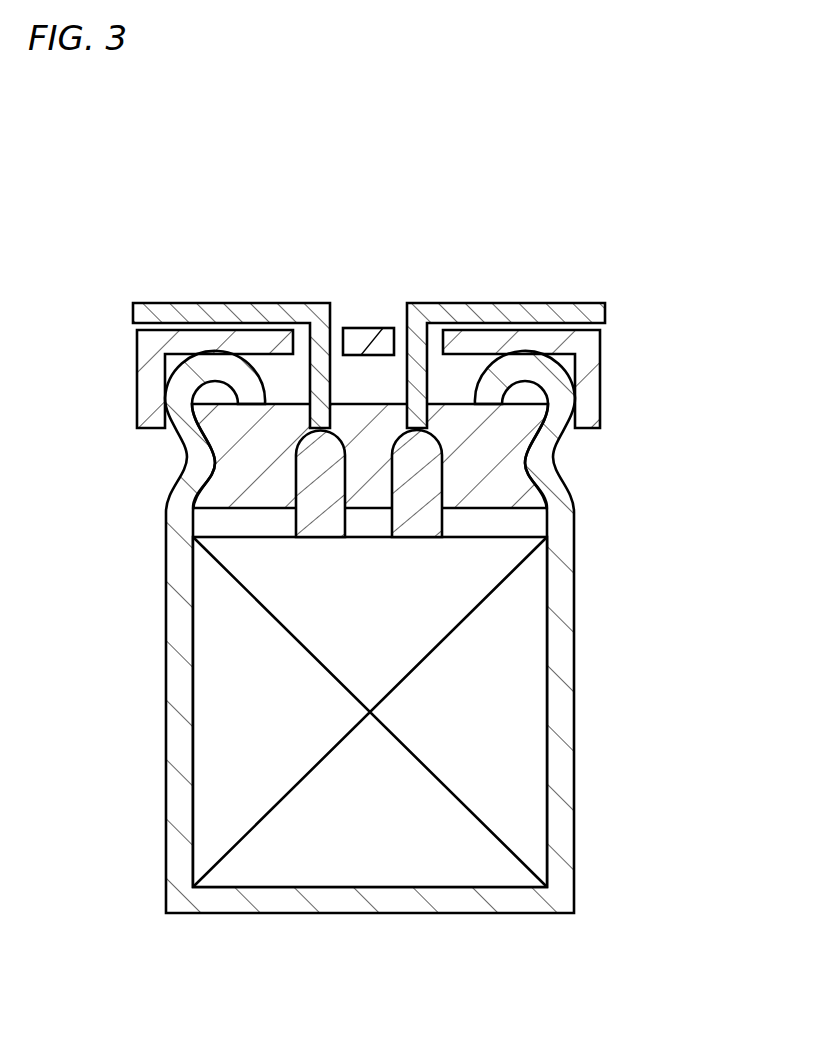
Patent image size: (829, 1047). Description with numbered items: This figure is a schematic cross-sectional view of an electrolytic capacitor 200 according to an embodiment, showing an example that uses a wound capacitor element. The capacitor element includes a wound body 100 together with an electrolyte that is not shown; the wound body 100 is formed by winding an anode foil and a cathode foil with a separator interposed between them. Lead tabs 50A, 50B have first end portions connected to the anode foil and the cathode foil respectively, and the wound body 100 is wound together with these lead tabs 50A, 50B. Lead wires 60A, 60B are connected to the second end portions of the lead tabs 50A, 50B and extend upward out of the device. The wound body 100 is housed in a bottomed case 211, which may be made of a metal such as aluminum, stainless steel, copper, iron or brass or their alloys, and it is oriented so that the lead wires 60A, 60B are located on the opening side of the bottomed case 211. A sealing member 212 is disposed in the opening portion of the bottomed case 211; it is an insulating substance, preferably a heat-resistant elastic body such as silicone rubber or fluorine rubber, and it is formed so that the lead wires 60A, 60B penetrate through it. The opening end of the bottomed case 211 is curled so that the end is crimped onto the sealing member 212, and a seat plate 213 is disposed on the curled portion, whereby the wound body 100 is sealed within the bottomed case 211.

The electrolytic capacitor 200 is at (460, 176).
The wound body 100 is at (238, 662).
The lead tab 50A is at (310, 447).
The lead tab 50B is at (420, 505).
The lead wire 60A is at (238, 302).
The lead wire 60B is at (516, 302).
The bottomed case 211 is at (180, 818).
The sealing member 212 is at (483, 458).
The seat plate 213 is at (150, 376).